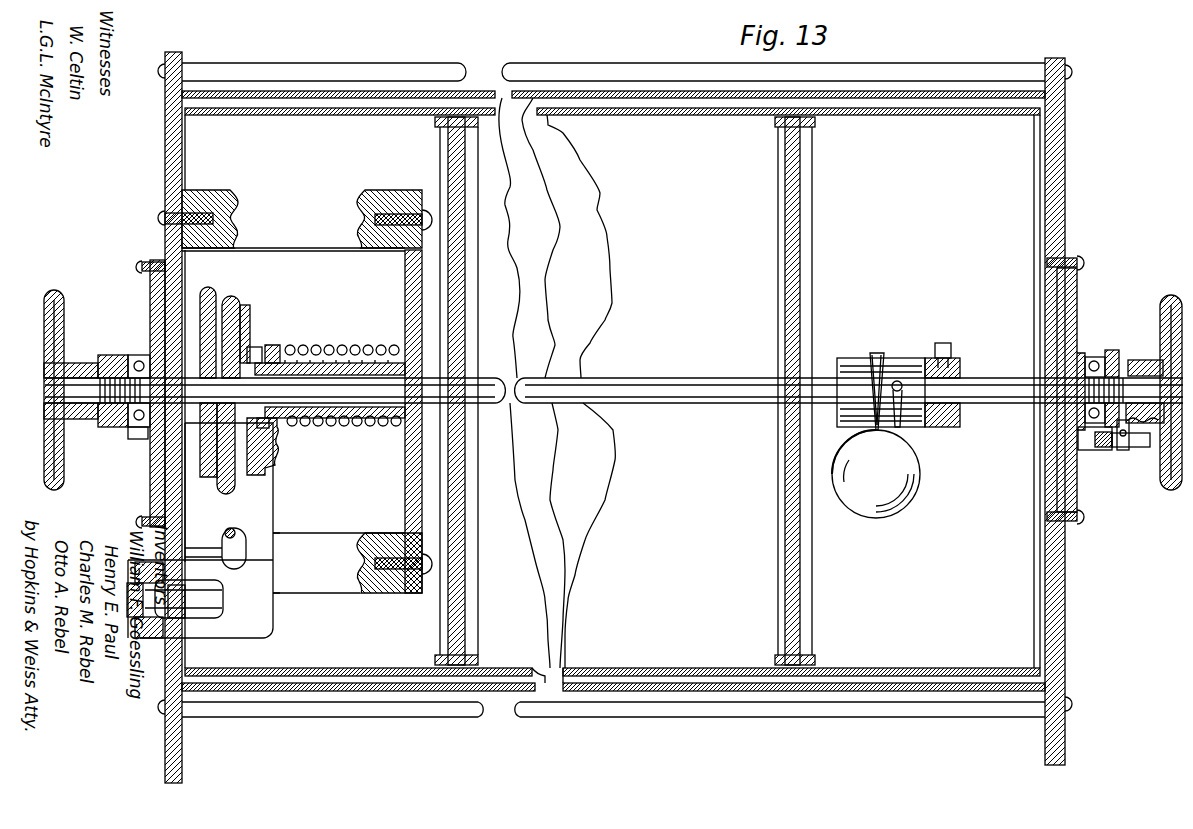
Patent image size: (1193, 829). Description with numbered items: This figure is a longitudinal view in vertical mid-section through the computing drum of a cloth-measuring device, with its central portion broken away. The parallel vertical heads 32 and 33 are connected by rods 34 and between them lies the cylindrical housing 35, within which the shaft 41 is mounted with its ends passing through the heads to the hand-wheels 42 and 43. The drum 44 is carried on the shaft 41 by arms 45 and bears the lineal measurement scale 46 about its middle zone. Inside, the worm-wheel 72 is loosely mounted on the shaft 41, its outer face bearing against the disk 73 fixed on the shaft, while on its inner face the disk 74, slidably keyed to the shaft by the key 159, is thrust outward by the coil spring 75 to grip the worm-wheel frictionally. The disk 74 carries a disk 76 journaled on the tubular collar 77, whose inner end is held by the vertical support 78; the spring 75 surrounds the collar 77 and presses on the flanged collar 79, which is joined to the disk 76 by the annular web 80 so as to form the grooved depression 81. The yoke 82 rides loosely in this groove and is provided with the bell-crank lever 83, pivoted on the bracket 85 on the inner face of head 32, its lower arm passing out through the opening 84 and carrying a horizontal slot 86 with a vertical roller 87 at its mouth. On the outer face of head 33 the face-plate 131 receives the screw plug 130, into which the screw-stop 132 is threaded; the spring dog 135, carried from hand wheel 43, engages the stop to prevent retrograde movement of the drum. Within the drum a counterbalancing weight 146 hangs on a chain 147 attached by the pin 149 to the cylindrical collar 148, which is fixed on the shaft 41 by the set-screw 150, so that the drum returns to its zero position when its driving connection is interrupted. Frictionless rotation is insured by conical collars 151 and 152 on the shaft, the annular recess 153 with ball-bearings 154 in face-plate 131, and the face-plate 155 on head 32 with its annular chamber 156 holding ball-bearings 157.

The head 32 is at (165, 153).
The head 33 is at (1065, 195).
The rods 34 is at (930, 58).
The cylindrical housing 35 is at (985, 91).
The shaft 41 is at (716, 403).
The hand-wheel 42 is at (44, 316).
The hand-wheel 43 is at (1168, 296).
The drum 44 is at (705, 115).
The arms 45 is at (440, 632).
The lineal measurement scale 46 is at (584, 668).
The worm-wheel 72 is at (214, 292).
The disk 73 is at (218, 486).
The disk 74 is at (250, 310).
The coil spring 75 is at (378, 350).
The disk 76 is at (236, 303).
The tubular collar 77 is at (345, 432).
The vertical support 78 is at (405, 280).
The flanged collar 79 is at (268, 430).
The annular web 80 is at (270, 440).
The grooved depression 81 is at (275, 355).
The yoke 82 is at (255, 347).
The bell-crank lever 83 is at (210, 530).
The opening 84 is at (170, 562).
The bracket 85 is at (225, 533).
The horizontal slot 86 is at (215, 602).
The vertical roller 87 is at (160, 602).
The screw plug 130 is at (1088, 450).
The face-plate 131 is at (1105, 447).
The screw-stop 132 is at (1120, 447).
The spring dog 135 is at (1135, 450).
The counterbalancing weight 146 is at (876, 474).
The chain 147 is at (872, 365).
The cylindrical collar 148 is at (930, 427).
The pin 149 is at (899, 380).
The set-screw 150 is at (946, 343).
The conical collar 151 is at (110, 355).
The conical collar 152 is at (1118, 352).
The annular recess 153 is at (1094, 357).
The ball-bearings 154 is at (1100, 355).
The face-plate 155 is at (150, 290).
The annular chamber 156 is at (136, 439).
The ball-bearings 157 is at (137, 355).
The key 159 is at (275, 345).